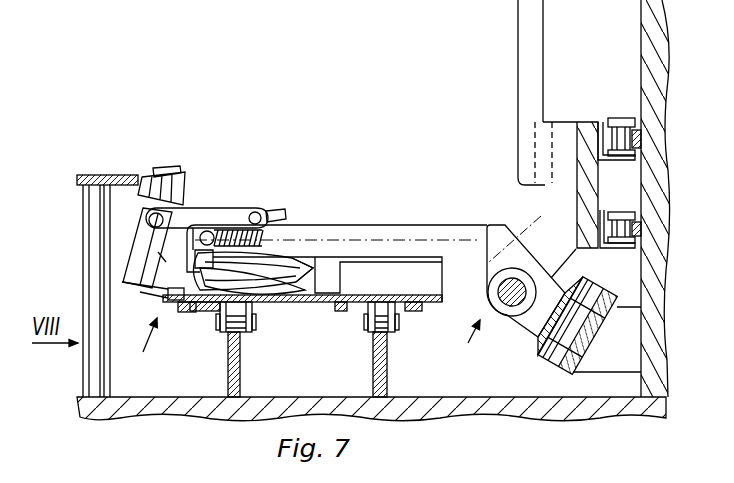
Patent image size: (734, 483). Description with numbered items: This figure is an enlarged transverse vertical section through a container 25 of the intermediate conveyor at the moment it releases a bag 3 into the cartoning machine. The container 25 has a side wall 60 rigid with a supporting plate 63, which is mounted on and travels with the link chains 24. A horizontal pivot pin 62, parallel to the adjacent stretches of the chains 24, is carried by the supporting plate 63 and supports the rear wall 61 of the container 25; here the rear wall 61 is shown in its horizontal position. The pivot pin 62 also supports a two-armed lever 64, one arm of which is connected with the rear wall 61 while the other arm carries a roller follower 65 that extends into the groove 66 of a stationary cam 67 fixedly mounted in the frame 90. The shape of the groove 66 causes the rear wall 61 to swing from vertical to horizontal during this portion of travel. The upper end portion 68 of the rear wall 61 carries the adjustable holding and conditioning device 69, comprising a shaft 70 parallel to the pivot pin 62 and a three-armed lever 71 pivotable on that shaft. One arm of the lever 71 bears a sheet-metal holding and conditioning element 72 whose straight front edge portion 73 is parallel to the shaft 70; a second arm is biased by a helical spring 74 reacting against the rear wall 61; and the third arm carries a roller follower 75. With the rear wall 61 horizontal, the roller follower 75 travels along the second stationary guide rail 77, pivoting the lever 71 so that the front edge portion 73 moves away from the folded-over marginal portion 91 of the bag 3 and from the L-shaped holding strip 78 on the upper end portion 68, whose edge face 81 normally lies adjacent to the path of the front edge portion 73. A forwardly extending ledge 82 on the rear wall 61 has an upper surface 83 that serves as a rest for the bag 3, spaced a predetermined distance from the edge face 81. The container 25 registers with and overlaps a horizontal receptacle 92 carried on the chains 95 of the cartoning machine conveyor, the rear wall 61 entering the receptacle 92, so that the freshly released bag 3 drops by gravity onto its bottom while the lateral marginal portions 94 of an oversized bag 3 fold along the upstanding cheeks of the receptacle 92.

The bag 3 is at (296, 286).
The link chains 24 is at (612, 118).
The container 25 is at (466, 348).
The side wall 60 is at (525, 18).
The rear wall 61 is at (461, 247).
The pivot pin 62 is at (500, 297).
The supporting plate 63 is at (583, 127).
The two-armed lever 64 is at (494, 232).
The roller follower 65 is at (541, 354).
The groove 66 is at (516, 362).
The stationary cam 67 is at (588, 335).
The upper end portion 68 is at (200, 230).
The holding and conditioning device 69 is at (142, 352).
The shaft 70 is at (182, 212).
The three-armed lever 71 is at (142, 237).
The holding and conditioning element 72 is at (160, 290).
The front edge portion 73 is at (178, 301).
The helical spring 74 is at (232, 213).
The roller follower 75 is at (163, 168).
The second stationary guide rail 77 is at (133, 176).
The holding strip 78 is at (162, 256).
The edge face 81 is at (187, 312).
The ledge 82 is at (320, 261).
The upper surface 83 is at (305, 268).
The frame 90 is at (657, 67).
The marginal portion 91 is at (206, 272).
The receptacle 92 is at (434, 298).
The lateral marginal portions 94 is at (268, 278).
The chains 95 is at (241, 331).